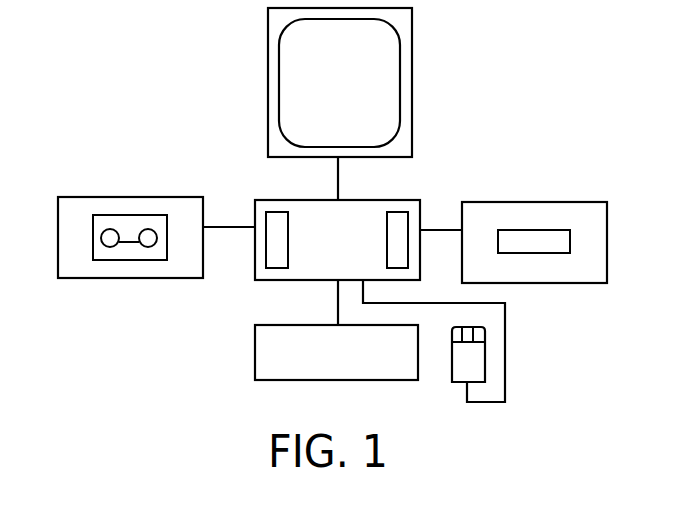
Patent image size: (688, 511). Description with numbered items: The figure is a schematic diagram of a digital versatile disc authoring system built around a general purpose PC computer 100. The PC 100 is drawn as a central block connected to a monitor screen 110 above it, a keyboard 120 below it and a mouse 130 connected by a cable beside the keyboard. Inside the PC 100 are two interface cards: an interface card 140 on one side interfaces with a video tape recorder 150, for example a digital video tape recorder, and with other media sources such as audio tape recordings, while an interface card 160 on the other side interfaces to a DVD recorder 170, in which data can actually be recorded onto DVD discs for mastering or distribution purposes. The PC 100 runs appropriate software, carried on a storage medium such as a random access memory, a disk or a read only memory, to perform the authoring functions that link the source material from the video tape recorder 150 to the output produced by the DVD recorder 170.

The PC computer 100 is at (262, 283).
The monitor screen 110 is at (268, 30).
The keyboard 120 is at (255, 350).
The mouse 130 is at (455, 384).
The interface card 140 is at (266, 214).
The video tape recorder 150 is at (92, 280).
The interface card 160 is at (418, 216).
The DVD recorder 170 is at (572, 202).